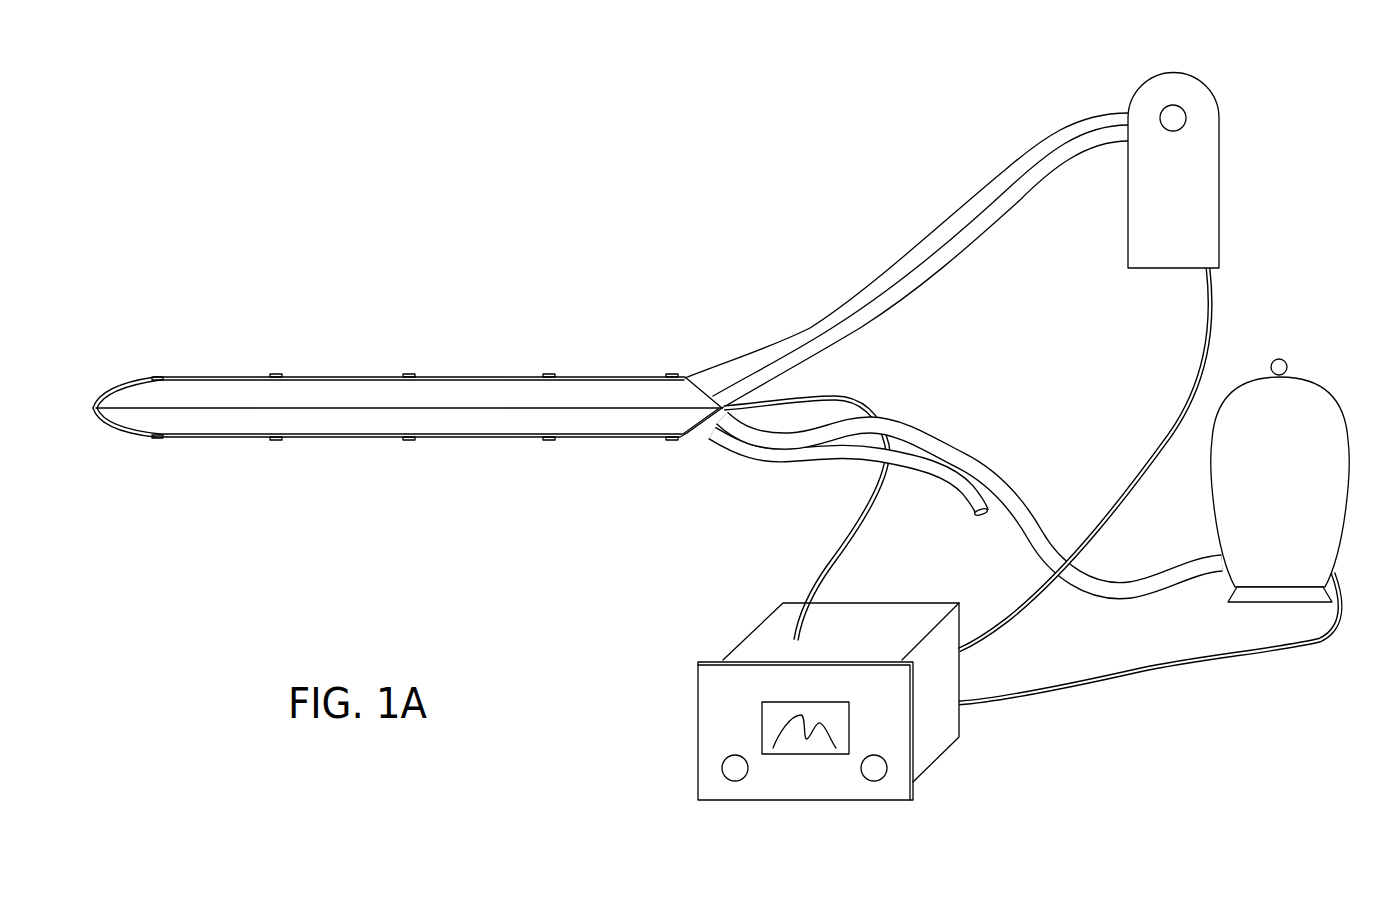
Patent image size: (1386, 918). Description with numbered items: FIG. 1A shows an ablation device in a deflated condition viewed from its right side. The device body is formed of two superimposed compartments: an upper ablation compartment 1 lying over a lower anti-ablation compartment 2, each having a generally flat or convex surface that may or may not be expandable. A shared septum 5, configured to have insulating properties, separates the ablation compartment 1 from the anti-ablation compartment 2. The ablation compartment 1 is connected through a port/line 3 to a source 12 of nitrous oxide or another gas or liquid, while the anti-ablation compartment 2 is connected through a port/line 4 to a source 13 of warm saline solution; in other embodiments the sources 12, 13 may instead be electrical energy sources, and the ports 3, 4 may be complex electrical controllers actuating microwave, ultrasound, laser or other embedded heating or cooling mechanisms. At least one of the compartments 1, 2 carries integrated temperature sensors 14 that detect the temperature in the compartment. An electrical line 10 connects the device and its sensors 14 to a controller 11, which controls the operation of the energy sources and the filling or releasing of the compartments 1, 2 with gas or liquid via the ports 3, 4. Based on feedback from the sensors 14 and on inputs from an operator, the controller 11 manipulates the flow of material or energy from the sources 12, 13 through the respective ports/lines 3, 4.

The ablation compartment 1 is at (453, 390).
The anti-ablation compartment 2 is at (368, 423).
The port/line 3 is at (912, 250).
The port/line 4 is at (933, 430).
The septum 5 is at (225, 410).
The electrical line 10 is at (847, 530).
The controller 11 is at (881, 612).
The source of nitrous oxide 12 is at (1220, 160).
The source of warm saline solution 13 is at (1297, 374).
The temperature sensors 14 is at (152, 380).